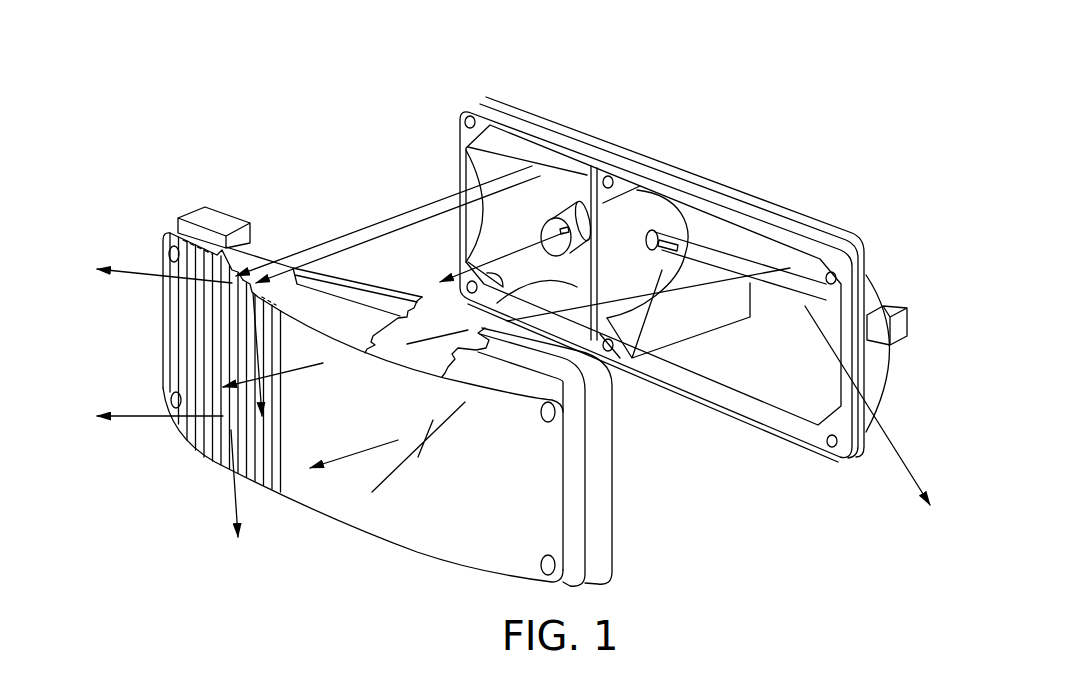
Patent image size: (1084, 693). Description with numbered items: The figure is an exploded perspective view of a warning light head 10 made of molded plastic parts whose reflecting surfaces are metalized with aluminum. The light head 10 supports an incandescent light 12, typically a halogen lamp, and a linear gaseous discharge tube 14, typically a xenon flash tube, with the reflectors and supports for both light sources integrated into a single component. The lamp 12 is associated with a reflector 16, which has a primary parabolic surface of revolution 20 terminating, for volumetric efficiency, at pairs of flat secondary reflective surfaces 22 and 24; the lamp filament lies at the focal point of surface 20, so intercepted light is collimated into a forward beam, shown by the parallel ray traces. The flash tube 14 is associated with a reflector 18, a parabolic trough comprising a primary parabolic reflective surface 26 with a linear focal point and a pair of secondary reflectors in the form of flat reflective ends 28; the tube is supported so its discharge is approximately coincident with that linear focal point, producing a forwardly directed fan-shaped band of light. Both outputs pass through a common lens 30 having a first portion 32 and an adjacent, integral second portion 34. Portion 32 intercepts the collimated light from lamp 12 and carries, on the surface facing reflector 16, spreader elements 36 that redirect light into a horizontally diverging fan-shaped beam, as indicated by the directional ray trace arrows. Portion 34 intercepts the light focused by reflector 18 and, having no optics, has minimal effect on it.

The light head 10 is at (404, 136).
The incandescent light 12 is at (560, 228).
The linear gaseous discharge tube 14 is at (790, 282).
The reflector 16 is at (563, 182).
The reflector 18 is at (742, 253).
The primary parabolic surface of revolution 20 is at (494, 226).
The flat secondary reflective surfaces 22 is at (473, 217).
The flat secondary reflective surfaces 24 is at (515, 308).
The primary parabolic reflective surface 26 is at (734, 376).
The flat reflective ends 28 is at (615, 277).
The lens 30 is at (203, 458).
The first portion 32 is at (190, 337).
The second portion 34 is at (474, 509).
The spreader elements 36 is at (247, 275).